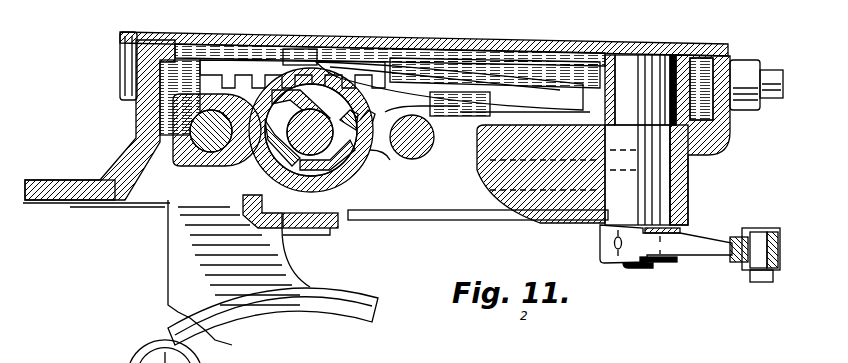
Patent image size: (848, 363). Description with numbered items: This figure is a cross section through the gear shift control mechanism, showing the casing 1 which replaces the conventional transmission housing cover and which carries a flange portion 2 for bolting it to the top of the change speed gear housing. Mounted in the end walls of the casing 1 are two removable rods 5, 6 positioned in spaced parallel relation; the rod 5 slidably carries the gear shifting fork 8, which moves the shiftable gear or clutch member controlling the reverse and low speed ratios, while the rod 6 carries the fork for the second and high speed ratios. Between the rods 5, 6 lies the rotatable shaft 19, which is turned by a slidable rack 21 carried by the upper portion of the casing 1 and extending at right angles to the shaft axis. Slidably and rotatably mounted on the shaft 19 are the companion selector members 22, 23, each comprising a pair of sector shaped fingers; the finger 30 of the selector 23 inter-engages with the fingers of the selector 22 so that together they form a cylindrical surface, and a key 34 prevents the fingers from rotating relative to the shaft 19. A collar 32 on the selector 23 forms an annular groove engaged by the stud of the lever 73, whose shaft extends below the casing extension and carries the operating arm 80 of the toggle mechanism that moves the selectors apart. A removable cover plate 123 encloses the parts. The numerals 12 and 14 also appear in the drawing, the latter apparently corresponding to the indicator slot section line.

The casing 1 is at (137, 90).
The flange portion 2 is at (66, 182).
The rod 5 is at (185, 150).
The rod 6 is at (416, 158).
The gear shifting fork 8 is at (195, 235).
The block 12 is at (688, 190).
The section line 14 is at (520, 352).
The rotatable shaft 19 is at (311, 130).
The slidable rack 21 is at (248, 66).
The selector member 22 is at (311, 130).
The selector member 23 is at (385, 161).
The sector shaped finger 30 is at (319, 133).
The collar 32 is at (375, 120).
The key 34 is at (300, 57).
The lever 73 is at (500, 90).
The operating arm 80 is at (713, 248).
The removable cover plate 123 is at (634, 73).